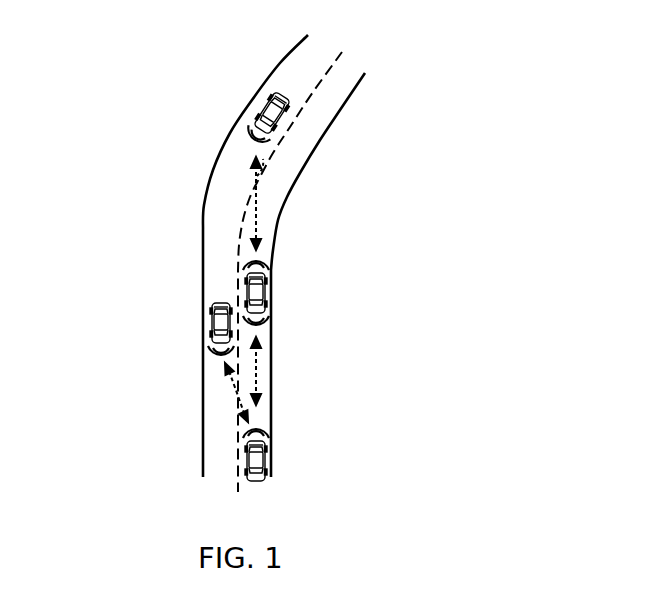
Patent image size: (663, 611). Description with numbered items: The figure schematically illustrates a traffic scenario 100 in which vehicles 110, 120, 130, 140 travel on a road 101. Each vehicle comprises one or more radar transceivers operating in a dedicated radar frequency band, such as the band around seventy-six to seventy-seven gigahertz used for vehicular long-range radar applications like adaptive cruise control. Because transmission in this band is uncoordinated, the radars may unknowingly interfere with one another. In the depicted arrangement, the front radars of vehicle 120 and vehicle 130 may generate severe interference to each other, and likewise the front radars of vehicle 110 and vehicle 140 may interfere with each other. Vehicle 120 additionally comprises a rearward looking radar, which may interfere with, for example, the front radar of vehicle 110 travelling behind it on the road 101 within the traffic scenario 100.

The traffic scenario 100 is at (106, 57).
The road 101 is at (302, 178).
The vehicle 110 is at (266, 475).
The vehicle 120 is at (265, 292).
The vehicle 130 is at (263, 110).
The vehicle 140 is at (212, 323).